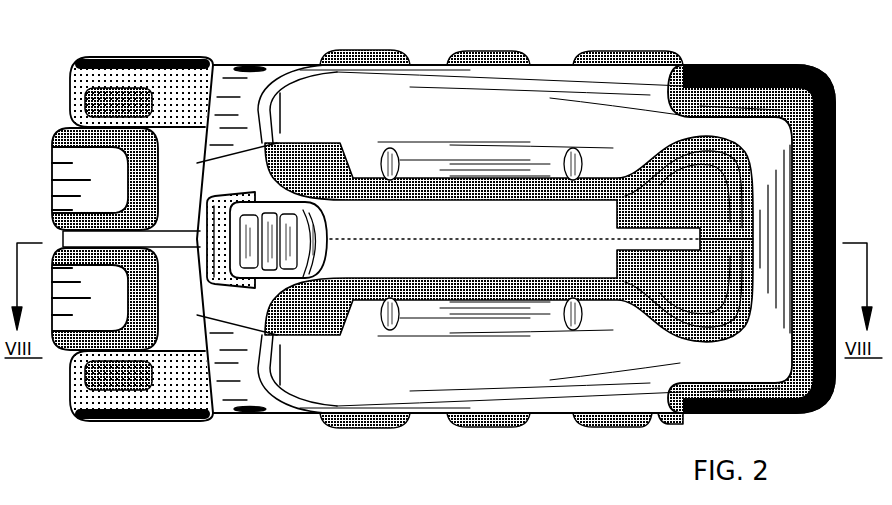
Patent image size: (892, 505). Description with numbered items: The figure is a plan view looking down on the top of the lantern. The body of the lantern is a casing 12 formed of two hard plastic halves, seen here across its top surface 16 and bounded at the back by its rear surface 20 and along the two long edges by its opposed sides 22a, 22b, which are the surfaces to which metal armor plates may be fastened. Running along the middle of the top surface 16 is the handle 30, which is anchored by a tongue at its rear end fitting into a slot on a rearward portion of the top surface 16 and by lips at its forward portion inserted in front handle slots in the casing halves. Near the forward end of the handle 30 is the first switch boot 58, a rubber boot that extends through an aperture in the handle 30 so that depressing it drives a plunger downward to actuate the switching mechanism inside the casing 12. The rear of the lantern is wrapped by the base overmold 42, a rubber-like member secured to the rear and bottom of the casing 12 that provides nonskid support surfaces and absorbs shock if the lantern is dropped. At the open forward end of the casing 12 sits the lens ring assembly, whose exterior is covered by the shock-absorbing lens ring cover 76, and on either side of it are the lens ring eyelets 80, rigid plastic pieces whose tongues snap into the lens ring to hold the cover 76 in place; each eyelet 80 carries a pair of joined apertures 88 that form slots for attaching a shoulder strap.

The casing 12 is at (668, 85).
The top surface 16 is at (522, 113).
The rear surface 20 is at (837, 158).
The side of casing 22a is at (428, 60).
The side of casing 22b is at (430, 423).
The handle 30 is at (362, 262).
The base overmold 42 is at (790, 75).
The first switch boot 58 is at (265, 272).
The lens ring cover 76 is at (72, 245).
The lens ring eyelet 80 is at (72, 95).
The joined apertures 88 is at (88, 105).